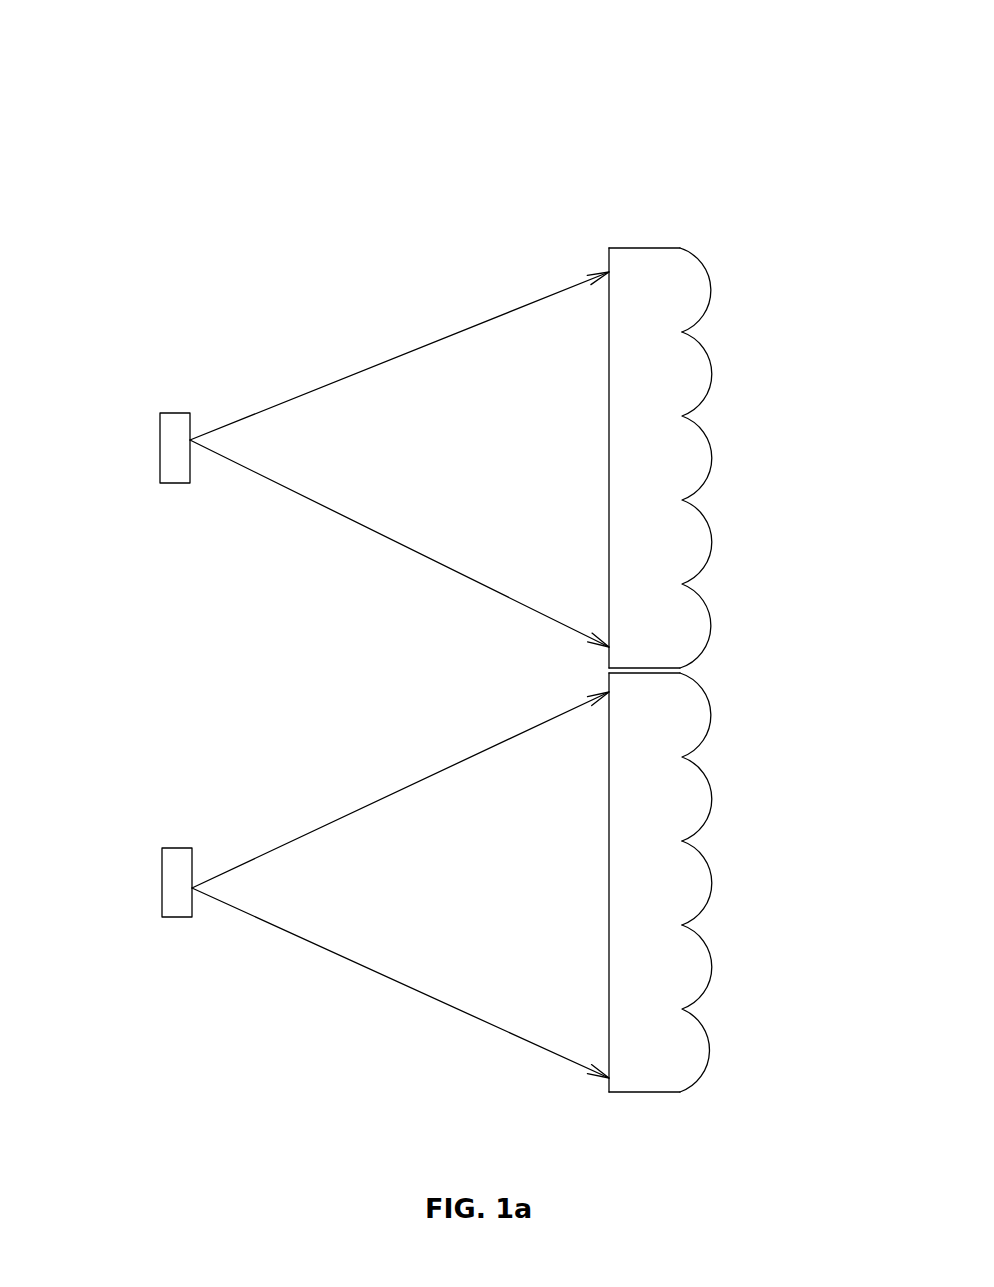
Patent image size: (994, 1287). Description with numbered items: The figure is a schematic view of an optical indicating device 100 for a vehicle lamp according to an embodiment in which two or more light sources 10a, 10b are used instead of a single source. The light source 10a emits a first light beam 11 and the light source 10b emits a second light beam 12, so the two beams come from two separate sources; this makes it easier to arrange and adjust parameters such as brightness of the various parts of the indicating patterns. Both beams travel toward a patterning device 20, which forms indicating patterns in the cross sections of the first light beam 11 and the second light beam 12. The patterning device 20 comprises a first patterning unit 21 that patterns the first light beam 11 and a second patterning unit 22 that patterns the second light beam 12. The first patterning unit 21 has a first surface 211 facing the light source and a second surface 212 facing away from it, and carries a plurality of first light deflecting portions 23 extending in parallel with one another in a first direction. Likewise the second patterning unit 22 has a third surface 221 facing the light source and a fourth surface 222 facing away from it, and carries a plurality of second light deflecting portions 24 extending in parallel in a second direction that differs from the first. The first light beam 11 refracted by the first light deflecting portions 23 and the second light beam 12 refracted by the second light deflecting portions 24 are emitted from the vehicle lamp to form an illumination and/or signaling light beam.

The optical indicating device 100 is at (458, 46).
The light source 10a is at (175, 450).
The light source 10b is at (178, 882).
The first light beam 11 is at (450, 397).
The second light beam 12 is at (380, 943).
The patterning device 20 is at (652, 215).
The first patterning unit 21 is at (706, 431).
The first surface 211 is at (608, 258).
The second surface 212 is at (782, 431).
The first light deflecting portions 23 is at (714, 268).
The second patterning unit 22 is at (706, 919).
The third surface 221 is at (609, 952).
The fourth surface 222 is at (776, 882).
The second light deflecting portions 24 is at (715, 887).